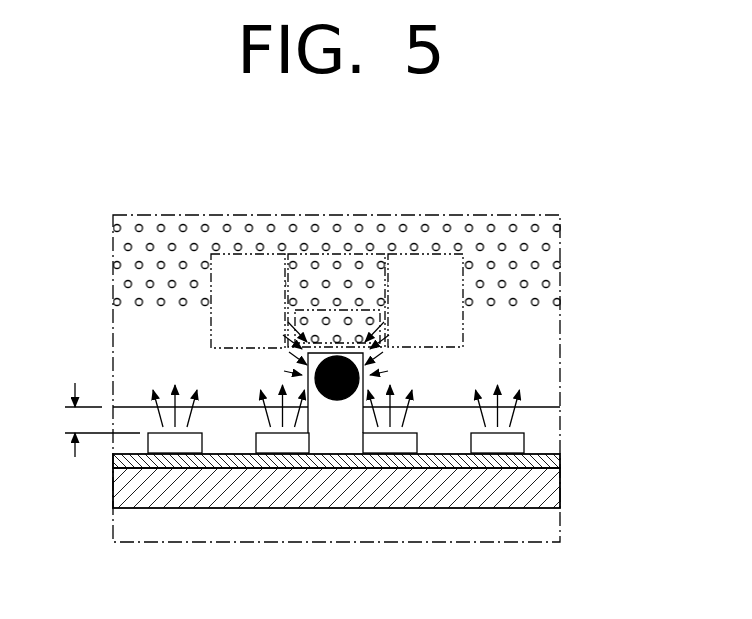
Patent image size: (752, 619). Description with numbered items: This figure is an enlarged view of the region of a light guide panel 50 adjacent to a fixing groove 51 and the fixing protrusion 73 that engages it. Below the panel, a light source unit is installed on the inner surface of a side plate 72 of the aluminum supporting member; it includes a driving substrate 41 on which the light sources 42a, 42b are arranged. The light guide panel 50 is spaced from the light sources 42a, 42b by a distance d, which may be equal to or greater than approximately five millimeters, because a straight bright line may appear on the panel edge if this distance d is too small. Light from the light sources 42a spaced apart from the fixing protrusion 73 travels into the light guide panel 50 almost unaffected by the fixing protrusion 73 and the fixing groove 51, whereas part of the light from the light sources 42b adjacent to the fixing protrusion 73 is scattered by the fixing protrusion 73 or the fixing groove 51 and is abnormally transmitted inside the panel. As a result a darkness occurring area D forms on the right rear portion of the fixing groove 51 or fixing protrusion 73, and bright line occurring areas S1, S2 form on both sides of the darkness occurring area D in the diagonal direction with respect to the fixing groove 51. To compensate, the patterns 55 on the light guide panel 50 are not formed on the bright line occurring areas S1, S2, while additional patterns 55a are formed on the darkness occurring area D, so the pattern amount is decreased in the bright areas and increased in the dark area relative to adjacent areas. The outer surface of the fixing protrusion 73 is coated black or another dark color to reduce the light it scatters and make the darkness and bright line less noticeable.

The light guide panel 50 is at (548, 333).
The patterns 55 is at (548, 246).
The additional patterns 55a is at (348, 316).
The bright line occurring area S1 is at (244, 254).
The bright line occurring area S2 is at (428, 254).
The darkness occurring area D is at (325, 254).
The fixing groove 51 is at (362, 382).
The fixing protrusion 73 is at (336, 400).
The driving substrate 41 is at (550, 461).
The side plate 72 is at (550, 490).
The light sources 42a is at (175, 443).
The light sources 42b is at (282, 443).
The distance d is at (94, 420).